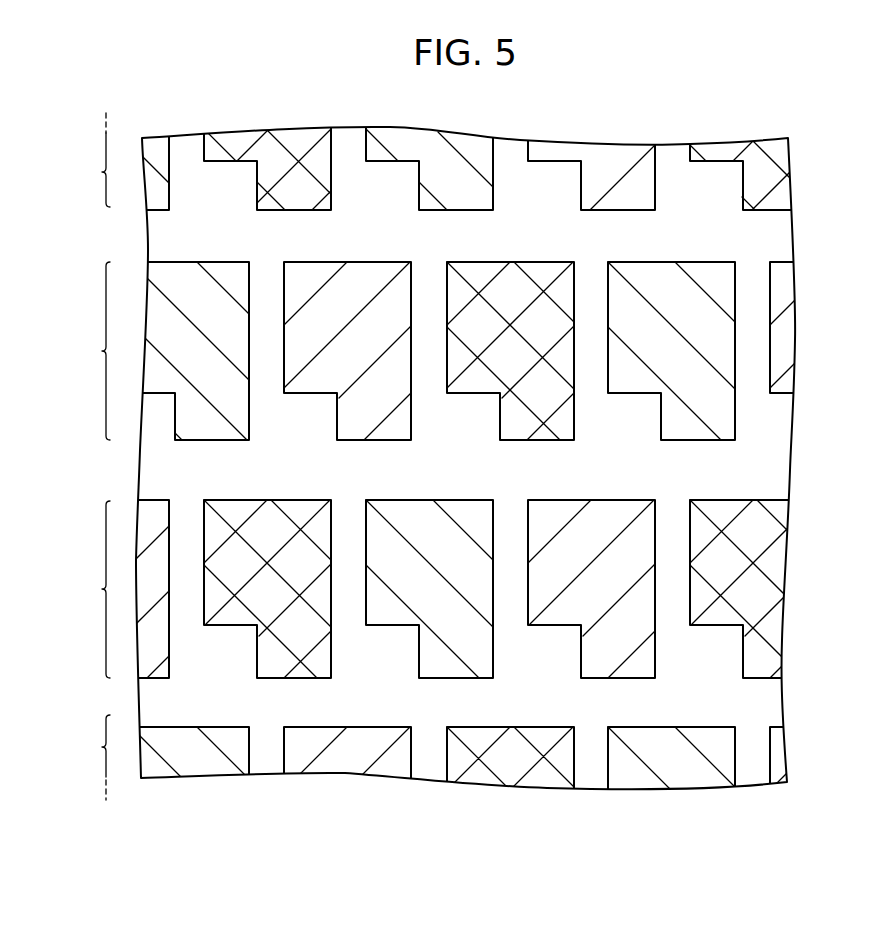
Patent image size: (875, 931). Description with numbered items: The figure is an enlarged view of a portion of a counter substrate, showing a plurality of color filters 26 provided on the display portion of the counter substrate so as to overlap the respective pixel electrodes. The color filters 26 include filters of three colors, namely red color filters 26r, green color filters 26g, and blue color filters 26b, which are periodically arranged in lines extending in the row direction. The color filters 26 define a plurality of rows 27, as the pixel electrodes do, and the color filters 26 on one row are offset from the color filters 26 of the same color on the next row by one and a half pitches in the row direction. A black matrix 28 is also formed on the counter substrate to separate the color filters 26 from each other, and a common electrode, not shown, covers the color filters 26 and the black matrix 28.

The color filters 26 is at (458, 468).
The red color filters 26r is at (357, 267).
The green color filters 26g is at (521, 267).
The blue color filters 26b is at (432, 817).
The rows 27 is at (90, 456).
The black matrix 28 is at (758, 470).